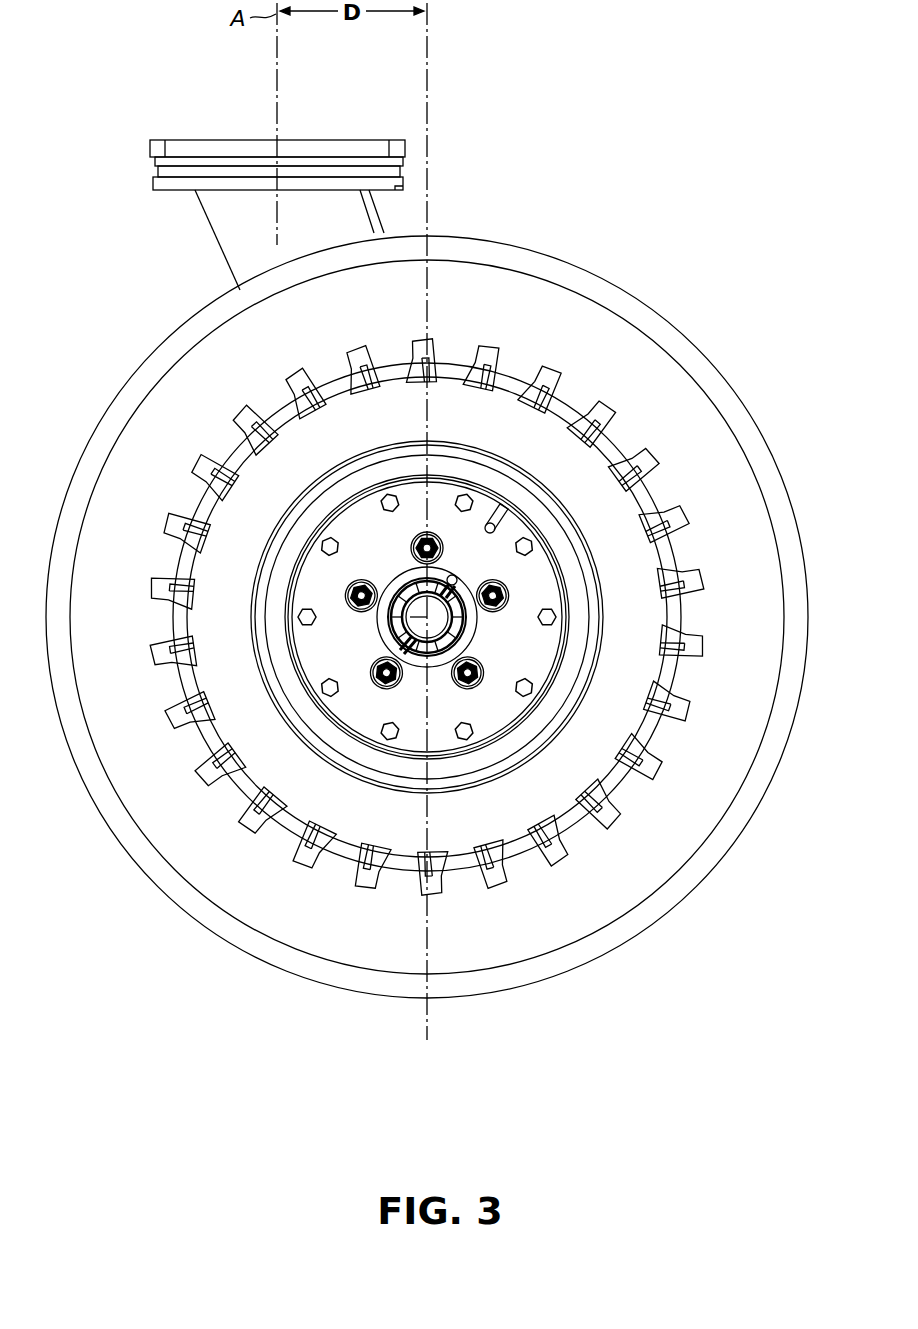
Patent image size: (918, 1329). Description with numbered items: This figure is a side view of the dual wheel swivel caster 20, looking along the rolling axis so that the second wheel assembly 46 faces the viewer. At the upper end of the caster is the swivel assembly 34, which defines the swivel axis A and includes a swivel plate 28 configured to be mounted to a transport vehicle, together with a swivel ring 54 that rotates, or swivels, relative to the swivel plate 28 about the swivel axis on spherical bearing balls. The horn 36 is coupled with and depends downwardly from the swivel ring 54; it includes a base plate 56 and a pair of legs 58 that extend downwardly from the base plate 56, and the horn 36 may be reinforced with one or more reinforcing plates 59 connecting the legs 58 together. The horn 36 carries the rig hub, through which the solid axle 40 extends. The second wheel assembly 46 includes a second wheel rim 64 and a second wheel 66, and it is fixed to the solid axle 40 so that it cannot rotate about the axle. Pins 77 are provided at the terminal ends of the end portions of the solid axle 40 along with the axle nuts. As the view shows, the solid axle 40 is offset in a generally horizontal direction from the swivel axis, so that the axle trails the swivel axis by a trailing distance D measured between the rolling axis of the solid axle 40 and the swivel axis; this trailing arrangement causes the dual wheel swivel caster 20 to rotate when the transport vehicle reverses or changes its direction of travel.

The dual wheel swivel caster 20 is at (421, 554).
The swivel plate 28 is at (225, 164).
The swivel assembly 34 is at (142, 148).
The horn 36 is at (207, 238).
The solid axle 40 is at (388, 618).
The second wheel assembly 46 is at (78, 440).
The swivel ring 54 is at (155, 170).
The base plate 56 is at (152, 182).
The legs 58 is at (268, 235).
The reinforcing plates 59 is at (378, 208).
The second wheel rim 64 is at (389, 552).
The second wheel 66 is at (186, 493).
The pins 77 is at (457, 576).